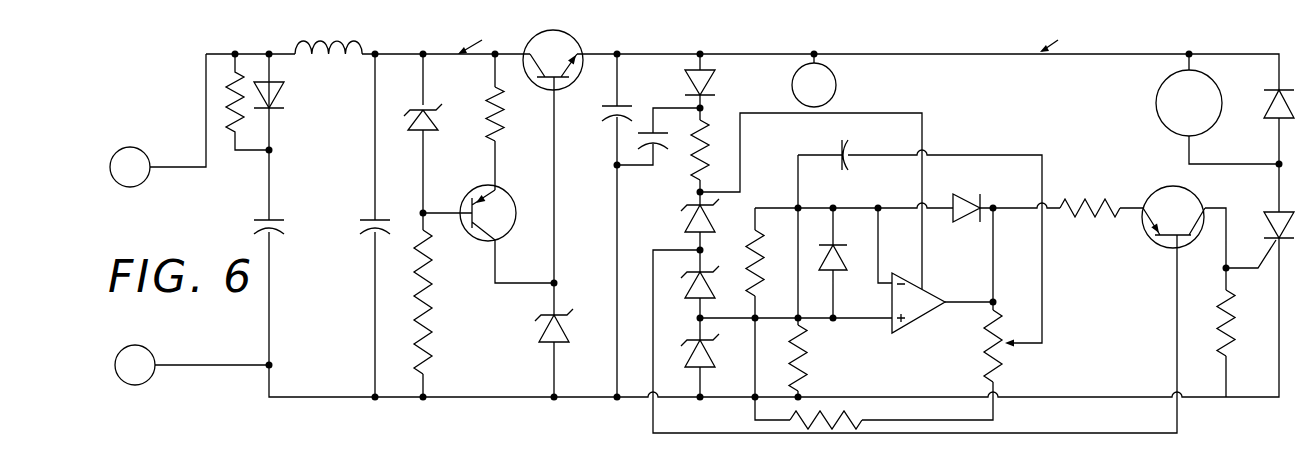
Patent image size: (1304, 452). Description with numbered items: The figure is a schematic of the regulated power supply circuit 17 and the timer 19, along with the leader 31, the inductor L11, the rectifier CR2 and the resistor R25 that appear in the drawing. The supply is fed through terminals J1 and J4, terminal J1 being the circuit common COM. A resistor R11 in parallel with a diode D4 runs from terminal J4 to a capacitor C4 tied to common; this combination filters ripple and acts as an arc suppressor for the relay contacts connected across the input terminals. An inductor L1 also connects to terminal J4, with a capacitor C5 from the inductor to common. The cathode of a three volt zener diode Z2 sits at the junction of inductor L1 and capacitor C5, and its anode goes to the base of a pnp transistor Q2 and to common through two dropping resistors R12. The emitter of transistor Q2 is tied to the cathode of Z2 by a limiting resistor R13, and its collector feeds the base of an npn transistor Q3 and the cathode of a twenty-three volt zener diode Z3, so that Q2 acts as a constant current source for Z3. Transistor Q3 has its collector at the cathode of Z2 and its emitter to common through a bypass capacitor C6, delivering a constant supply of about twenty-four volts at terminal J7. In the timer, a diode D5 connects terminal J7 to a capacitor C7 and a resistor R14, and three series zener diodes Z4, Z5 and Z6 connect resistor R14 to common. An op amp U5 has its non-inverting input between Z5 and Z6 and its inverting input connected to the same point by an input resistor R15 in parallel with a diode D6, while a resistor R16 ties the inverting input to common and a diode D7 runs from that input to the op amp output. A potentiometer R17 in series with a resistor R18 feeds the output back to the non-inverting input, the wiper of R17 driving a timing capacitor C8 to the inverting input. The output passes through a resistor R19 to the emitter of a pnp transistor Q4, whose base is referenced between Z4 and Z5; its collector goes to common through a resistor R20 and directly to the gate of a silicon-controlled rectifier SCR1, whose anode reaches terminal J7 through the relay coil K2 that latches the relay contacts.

The regulated power supply circuit 17 is at (488, 44).
The timer 19 is at (1065, 42).
The control circuit 31 is at (1200, 451).
The terminal J1 is at (135, 365).
The terminal J4 is at (130, 167).
The terminal J7 is at (814, 85).
The relay coil K2 is at (1189, 103).
The op amp U5 is at (918, 303).
The resistor R11 is at (238, 140).
The dropping resistors R12 is at (430, 282).
The limiting resistor R13 is at (497, 130).
The resistor R14 is at (707, 126).
The input resistor R15 is at (765, 280).
The resistor R16 is at (800, 362).
The potentiometer R17 is at (1002, 353).
The resistor R18 is at (851, 447).
The resistor R19 is at (1129, 189).
The resistor R20 is at (1226, 295).
The resistor R25 is at (828, 428).
The diode D4 is at (272, 112).
The diode D5 is at (708, 92).
The diode D6 is at (837, 262).
The diode D7 is at (966, 196).
The zener diode Z2 is at (427, 128).
The zener diode Z3 is at (551, 345).
The zener diode Z4 is at (688, 208).
The zener diode Z5 is at (709, 290).
The zener diode Z6 is at (709, 362).
The capacitor C4 is at (271, 228).
The capacitor C5 is at (377, 226).
The bypass capacitor C6 is at (620, 108).
The capacitor C7 is at (655, 150).
The timing capacitor C8 is at (850, 152).
The inductor L1 is at (330, 70).
The inductor L11 is at (334, 444).
The pnp transistor Q2 is at (499, 242).
The npn transistor Q3 is at (578, 48).
The pnp transistor Q4 is at (1151, 245).
The silicon-controlled rectifier SCR1 is at (1270, 188).
The rectifier CR2 is at (386, 451).
The circuit common COM is at (578, 398).